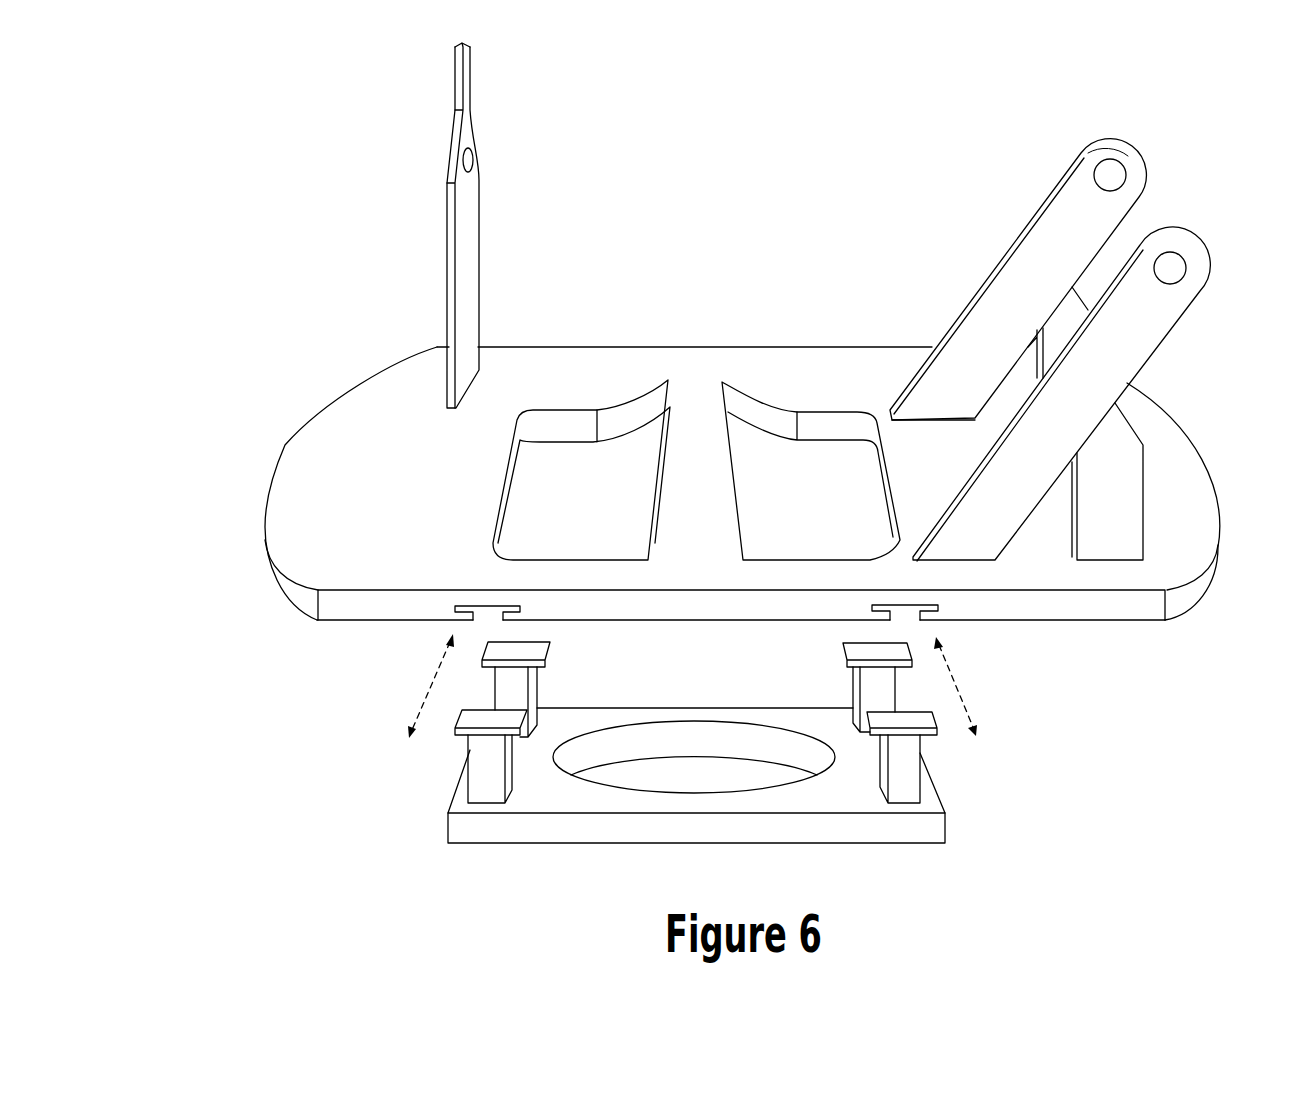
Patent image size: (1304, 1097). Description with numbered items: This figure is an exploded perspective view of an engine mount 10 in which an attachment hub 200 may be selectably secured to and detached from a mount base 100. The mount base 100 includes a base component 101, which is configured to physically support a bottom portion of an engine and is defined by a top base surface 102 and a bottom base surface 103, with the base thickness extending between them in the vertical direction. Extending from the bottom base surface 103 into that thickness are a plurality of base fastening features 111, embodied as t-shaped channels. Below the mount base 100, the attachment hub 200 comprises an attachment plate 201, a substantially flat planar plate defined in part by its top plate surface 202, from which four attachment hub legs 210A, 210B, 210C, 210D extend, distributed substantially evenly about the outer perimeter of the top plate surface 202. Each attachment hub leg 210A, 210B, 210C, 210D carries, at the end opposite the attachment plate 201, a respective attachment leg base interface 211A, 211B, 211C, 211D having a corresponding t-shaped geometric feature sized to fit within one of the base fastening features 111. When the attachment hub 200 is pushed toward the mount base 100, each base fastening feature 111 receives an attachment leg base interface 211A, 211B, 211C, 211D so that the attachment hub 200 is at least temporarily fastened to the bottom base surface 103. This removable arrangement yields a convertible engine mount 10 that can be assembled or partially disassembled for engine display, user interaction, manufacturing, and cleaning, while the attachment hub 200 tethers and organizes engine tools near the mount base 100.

The engine mount 10 is at (790, 144).
The mount base 100 is at (275, 220).
The base component 101 is at (273, 430).
The top base surface 102 is at (350, 567).
The bottom base surface 103 is at (387, 622).
The base fastening feature 111 is at (492, 606).
The attachment hub 200 is at (1108, 779).
The attachment plate 201 is at (827, 793).
The top plate surface 202 is at (700, 845).
The attachment hub leg 210A is at (485, 783).
The attachment hub leg 210B is at (523, 700).
The attachment hub leg 210C is at (870, 698).
The attachment hub leg 210D is at (908, 773).
The attachment leg base interface 211A is at (482, 718).
The attachment leg base interface 211B is at (532, 648).
The attachment leg base interface 211C is at (870, 652).
The attachment leg base interface 211D is at (925, 717).